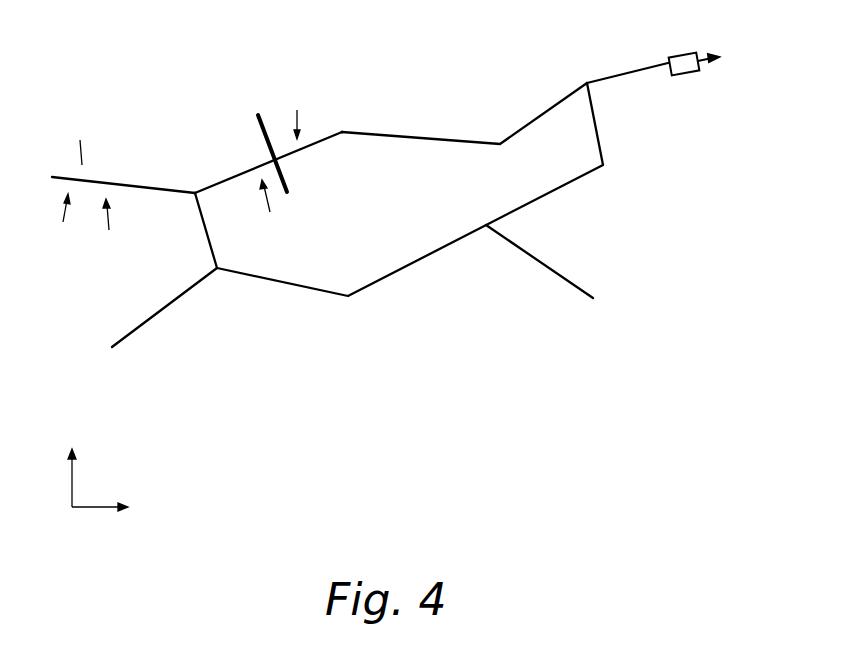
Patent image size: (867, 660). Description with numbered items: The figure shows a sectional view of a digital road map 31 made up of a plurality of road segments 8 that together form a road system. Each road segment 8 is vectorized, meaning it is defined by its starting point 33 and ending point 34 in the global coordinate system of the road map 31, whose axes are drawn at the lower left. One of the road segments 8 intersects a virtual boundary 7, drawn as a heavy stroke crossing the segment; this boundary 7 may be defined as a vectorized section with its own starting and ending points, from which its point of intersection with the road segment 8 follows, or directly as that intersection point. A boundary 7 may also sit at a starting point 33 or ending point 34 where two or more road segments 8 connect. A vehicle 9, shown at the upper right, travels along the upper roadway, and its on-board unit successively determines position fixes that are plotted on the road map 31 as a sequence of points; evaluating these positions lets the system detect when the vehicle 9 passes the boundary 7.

The virtual boundary 7 is at (289, 186).
The road segment 8 is at (360, 191).
The vehicle 9 is at (680, 54).
The digital road map 31 is at (360, 275).
The starting point 33 is at (195, 191).
The ending point 34 is at (342, 130).